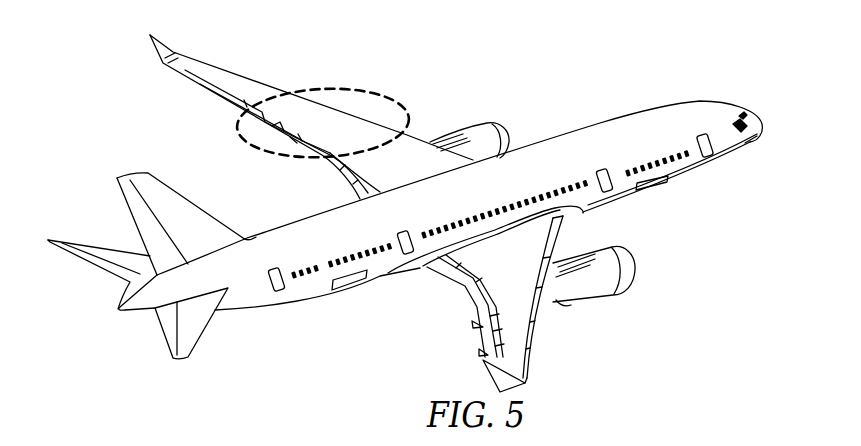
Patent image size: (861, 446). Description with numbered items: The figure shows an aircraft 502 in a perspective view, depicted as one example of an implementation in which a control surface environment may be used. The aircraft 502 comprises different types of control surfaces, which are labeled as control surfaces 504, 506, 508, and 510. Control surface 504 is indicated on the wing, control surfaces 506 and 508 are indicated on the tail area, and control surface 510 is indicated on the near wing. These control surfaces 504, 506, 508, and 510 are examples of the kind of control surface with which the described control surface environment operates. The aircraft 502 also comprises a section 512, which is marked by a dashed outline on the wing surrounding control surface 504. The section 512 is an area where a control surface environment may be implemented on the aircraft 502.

The aircraft 502 is at (467, 53).
The control surface 504 is at (277, 131).
The control surface 506 is at (132, 203).
The control surface 508 is at (107, 265).
The control surface 510 is at (477, 308).
The section 512 is at (337, 88).